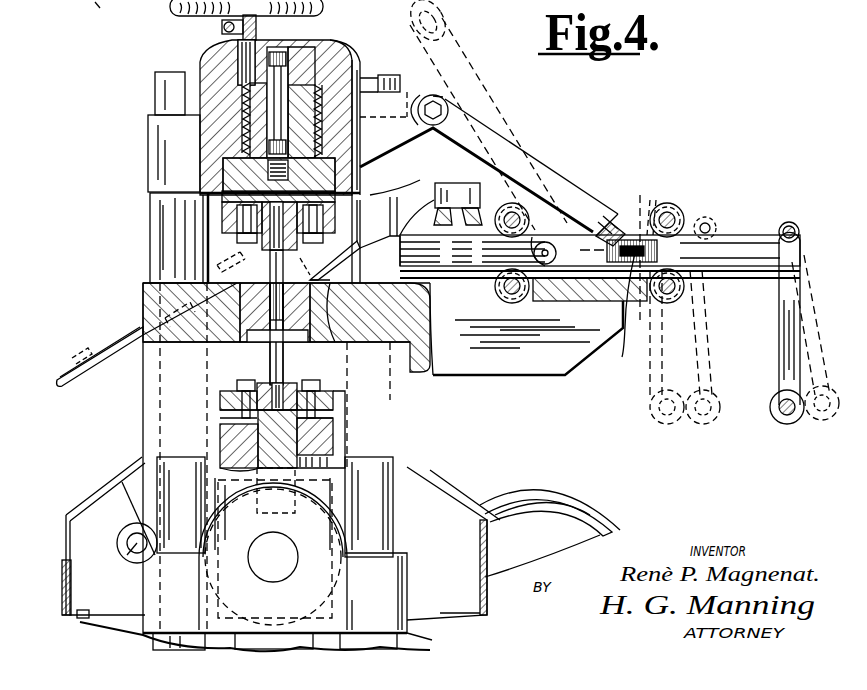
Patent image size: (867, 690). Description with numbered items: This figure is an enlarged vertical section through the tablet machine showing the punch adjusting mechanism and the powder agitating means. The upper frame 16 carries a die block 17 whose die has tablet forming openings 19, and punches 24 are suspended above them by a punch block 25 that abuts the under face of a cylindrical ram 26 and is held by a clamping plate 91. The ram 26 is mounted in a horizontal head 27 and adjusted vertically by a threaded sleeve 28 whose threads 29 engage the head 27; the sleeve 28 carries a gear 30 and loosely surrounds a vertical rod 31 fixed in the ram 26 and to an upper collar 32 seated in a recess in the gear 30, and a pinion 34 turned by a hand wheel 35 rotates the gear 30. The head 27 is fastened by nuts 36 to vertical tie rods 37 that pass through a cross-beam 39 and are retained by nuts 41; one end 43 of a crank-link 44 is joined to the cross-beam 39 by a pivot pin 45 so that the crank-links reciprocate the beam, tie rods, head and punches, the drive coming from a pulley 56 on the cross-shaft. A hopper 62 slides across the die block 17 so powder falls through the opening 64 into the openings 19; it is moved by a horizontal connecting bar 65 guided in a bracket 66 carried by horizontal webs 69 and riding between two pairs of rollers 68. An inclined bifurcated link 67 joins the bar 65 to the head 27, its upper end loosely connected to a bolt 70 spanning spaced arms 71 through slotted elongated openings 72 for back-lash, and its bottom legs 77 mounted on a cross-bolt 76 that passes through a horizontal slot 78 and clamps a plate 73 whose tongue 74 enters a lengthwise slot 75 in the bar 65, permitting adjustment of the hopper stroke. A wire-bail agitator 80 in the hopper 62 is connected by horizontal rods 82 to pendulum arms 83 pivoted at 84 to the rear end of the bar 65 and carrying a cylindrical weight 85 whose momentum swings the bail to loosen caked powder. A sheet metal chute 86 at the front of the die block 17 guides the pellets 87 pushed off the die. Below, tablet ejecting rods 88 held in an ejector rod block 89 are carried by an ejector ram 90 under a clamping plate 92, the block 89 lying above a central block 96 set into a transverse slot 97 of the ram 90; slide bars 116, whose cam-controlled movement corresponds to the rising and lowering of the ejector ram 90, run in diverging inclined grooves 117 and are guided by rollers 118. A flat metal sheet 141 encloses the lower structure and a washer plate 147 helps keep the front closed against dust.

The upper frame 16 is at (85, 8).
The die block 17 is at (150, 312).
The tablet forming openings 19 is at (267, 303).
The punches 24 is at (275, 262).
The punch block 25 is at (260, 219).
The cylindrical ram 26 is at (217, 198).
The horizontal head 27 is at (217, 127).
The threaded sleeve 28 is at (240, 152).
The threads 29 is at (237, 133).
The gear 30 is at (345, 50).
The vertical rod 31 is at (278, 108).
The upper collar 32 is at (297, 40).
The pinion 34 is at (238, 63).
The hand wheel 35 is at (170, 8).
The nuts 36 is at (163, 88).
The vertical tie rods 37 is at (177, 267).
The cross-beam 39 is at (372, 573).
The nuts 41 is at (415, 647).
The end of crank-link 43 is at (400, 529).
The crank-links 44 is at (290, 645).
The pivot pins 45 is at (278, 572).
The pulley 56 is at (572, 490).
The hopper 62 is at (400, 230).
The opening 64 is at (342, 345).
The horizontal connecting bar 65 is at (585, 222).
The bracket 66 is at (640, 303).
The bifurcated link 67 is at (553, 173).
The rollers 68 is at (683, 210).
The horizontal webs 69 is at (575, 368).
The bolt 70 is at (500, 104).
The spaced apart arms 71 is at (400, 88).
The slotted elongated openings 72 is at (453, 100).
The plate 73 is at (650, 233).
The tongue 74 is at (627, 240).
The slot 75 is at (709, 221).
The cross-bolt 76 is at (623, 357).
The bottom legs 77 is at (580, 226).
The horizontal slot 78 is at (655, 256).
The agitator 80 is at (433, 312).
The horizontal rods 82 is at (475, 267).
The pendulum arms 83 is at (780, 365).
The pivot 84 is at (799, 222).
The cylindrical weight 85 is at (785, 417).
The sheet metal chute 86 is at (110, 360).
The pellets 87 is at (82, 352).
The tablet ejecting rods 88 is at (300, 368).
The ejector rod block 89 is at (330, 408).
The ejector ram 90 is at (270, 440).
The clamping plate 91 is at (243, 213).
The clamping plate 92 is at (225, 398).
The central block 96 is at (272, 442).
The transverse slot 97 is at (333, 453).
The slide bars 116 is at (123, 527).
The diverging inclined grooves 117 is at (140, 513).
The guide rollers 118 is at (127, 556).
The flat metal sheet 141 is at (66, 520).
The washer plate 147 is at (62, 612).